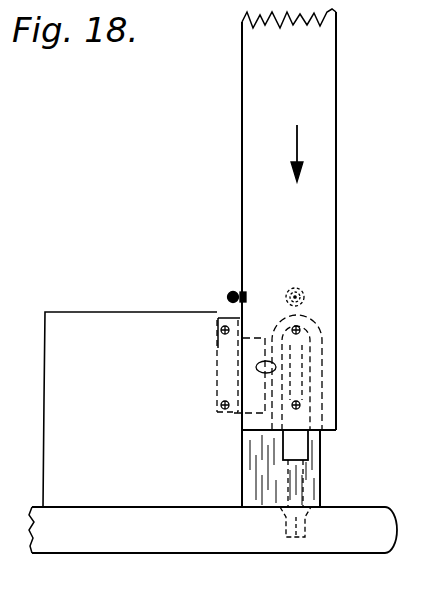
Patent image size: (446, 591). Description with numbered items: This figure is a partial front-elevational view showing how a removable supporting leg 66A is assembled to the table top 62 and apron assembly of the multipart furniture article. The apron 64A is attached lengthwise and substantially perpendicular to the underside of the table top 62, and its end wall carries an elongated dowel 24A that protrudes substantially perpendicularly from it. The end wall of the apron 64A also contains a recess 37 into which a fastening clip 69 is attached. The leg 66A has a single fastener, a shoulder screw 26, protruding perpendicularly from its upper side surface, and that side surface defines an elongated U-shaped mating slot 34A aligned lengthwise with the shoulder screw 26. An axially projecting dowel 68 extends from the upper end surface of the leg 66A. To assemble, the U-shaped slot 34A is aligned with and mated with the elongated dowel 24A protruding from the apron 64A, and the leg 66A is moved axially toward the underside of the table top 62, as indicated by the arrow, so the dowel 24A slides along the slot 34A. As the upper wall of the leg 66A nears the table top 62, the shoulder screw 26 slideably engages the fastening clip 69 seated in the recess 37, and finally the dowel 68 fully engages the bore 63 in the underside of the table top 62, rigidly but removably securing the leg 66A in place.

The leg 66A is at (323, 148).
The apron 64A is at (105, 336).
The recess 37 is at (217, 350).
The fastening clip 69 is at (230, 309).
The shoulder screw 26 is at (290, 293).
The elongated U-shaped mating slot 34A is at (258, 370).
The elongated dowel 24A is at (283, 473).
The axially projecting dowel 68 is at (300, 447).
The table top 62 is at (243, 535).
The bore 63 is at (296, 545).